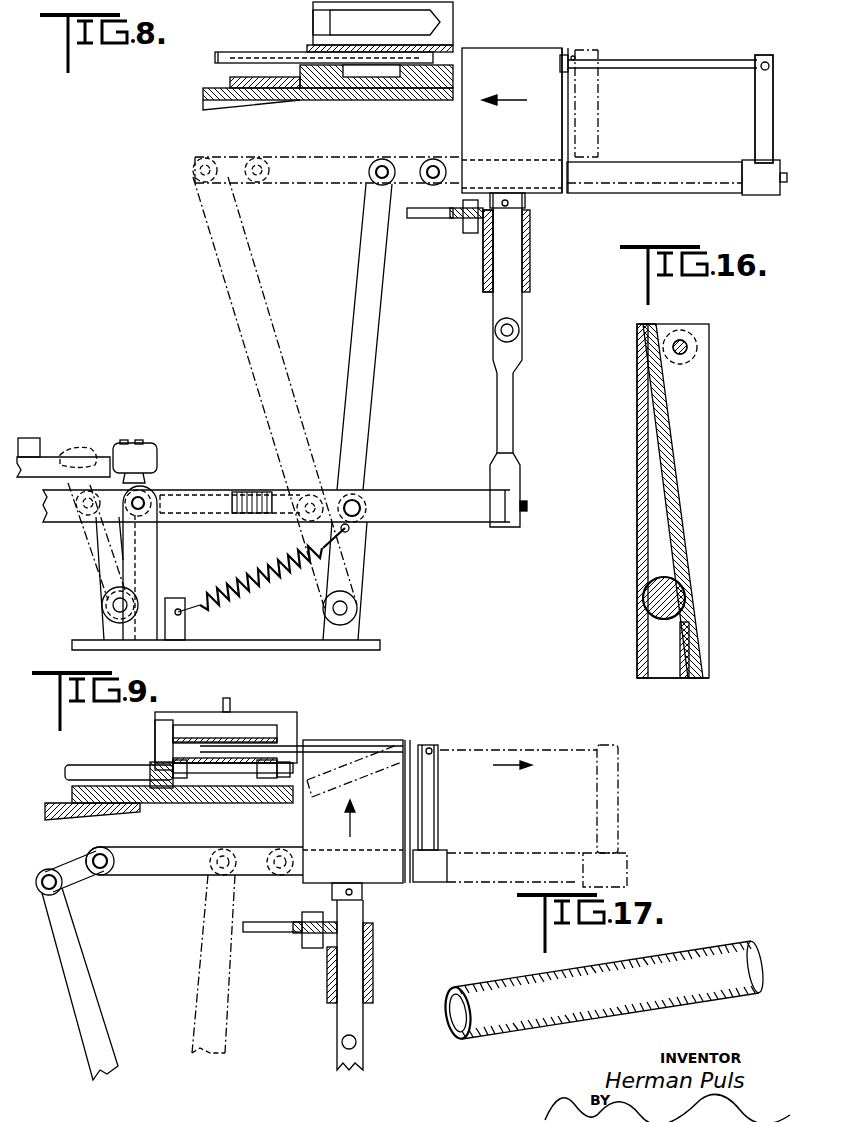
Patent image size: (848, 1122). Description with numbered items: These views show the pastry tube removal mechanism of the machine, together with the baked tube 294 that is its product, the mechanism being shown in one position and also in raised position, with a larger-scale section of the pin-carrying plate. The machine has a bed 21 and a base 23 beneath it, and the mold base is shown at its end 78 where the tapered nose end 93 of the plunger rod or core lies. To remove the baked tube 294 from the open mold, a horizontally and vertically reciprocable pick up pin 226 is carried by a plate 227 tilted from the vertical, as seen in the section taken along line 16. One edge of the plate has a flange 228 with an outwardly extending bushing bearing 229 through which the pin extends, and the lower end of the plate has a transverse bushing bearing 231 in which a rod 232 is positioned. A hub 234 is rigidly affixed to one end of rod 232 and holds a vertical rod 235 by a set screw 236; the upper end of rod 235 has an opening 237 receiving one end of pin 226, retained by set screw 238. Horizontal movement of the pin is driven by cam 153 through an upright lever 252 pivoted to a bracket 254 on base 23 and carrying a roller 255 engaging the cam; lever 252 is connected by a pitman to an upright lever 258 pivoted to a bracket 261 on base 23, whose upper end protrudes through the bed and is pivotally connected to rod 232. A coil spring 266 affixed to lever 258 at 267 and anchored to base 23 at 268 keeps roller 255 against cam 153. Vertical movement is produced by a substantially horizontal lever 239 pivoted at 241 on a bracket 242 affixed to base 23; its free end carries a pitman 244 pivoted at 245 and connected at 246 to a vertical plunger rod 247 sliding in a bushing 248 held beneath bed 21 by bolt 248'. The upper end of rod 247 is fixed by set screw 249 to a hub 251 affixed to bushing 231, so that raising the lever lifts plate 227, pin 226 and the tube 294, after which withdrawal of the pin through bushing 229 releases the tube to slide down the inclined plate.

In FIG. 8, the nose end 93 is at (347, 90).
In FIG. 8, the section line 16— 16 is at (540, 35).
In FIG. 8, the bushing bearing 229 is at (573, 55).
In FIG. 16, the bushing bearing 229 is at (699, 345).
In FIG. 8, the pick up pin 226 is at (650, 62).
In FIG. 16, the pick up pin 226 is at (684, 352).
In FIG. 9, the pick up pin 226 is at (330, 752).
In FIG. 8, the opening 237 is at (753, 62).
In FIG. 8, the set screw 238 is at (762, 69).
In FIG. 8, the flange 228 is at (560, 106).
In FIG. 16, the flange 228 is at (699, 412).
In FIG. 8, the plate 227 is at (542, 127).
In FIG. 16, the plate 227 is at (680, 495).
In FIG. 8, the vertical rod 235 is at (762, 122).
In FIG. 8, the set screw 249 is at (507, 200).
In FIG. 8, the hub 251 is at (527, 202).
In FIG. 16, the hub 251 is at (667, 665).
In FIG. 8, the rod 232 is at (677, 177).
In FIG. 16, the rod 232 is at (641, 596).
In FIG. 9, the rod 232 is at (178, 867).
In FIG. 8, the hub 234 is at (760, 196).
In FIG. 8, the set screw 236 is at (788, 182).
In FIG. 8, the bed 21 is at (452, 220).
In FIG. 8, the bolt 248' is at (461, 238).
In FIG. 8, the bushing 248 is at (460, 255).
In FIG. 8, the vertical plunger rod 247 is at (510, 305).
In FIG. 8, the pivot 246 is at (517, 330).
In FIG. 8, the pitman 244 is at (510, 402).
In FIG. 8, the pivot 245 is at (527, 505).
In FIG. 8, the lever 258 is at (370, 373).
In FIG. 9, the lever 258 is at (83, 983).
In FIG. 8, the horizontal lever 239 is at (420, 488).
In FIG. 8, the cam 153 is at (50, 458).
In FIG. 8, the roller 255 is at (113, 450).
In FIG. 8, the pivot 241 is at (143, 490).
In FIG. 8, the bracket 242 is at (150, 550).
In FIG. 8, the lever 252 is at (113, 553).
In FIG. 8, the bracket 254 is at (107, 628).
In FIG. 8, the base 23 is at (287, 650).
In FIG. 8, the spring anchor 268 is at (180, 627).
In FIG. 8, the coil spring 266 is at (273, 587).
In FIG. 8, the spring attachment point 267 is at (357, 533).
In FIG. 8, the bracket 261 is at (355, 632).
In FIG. 16, the bushing bearing 231 is at (682, 601).
In FIG. 9, the end of mold base 78 is at (162, 790).
In FIG. 17, the baked tube 294 is at (625, 1005).